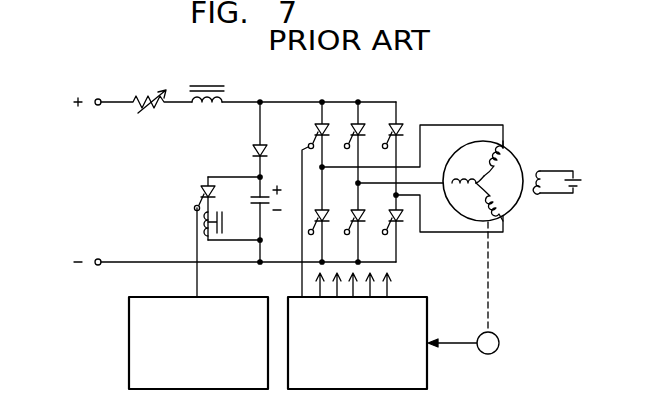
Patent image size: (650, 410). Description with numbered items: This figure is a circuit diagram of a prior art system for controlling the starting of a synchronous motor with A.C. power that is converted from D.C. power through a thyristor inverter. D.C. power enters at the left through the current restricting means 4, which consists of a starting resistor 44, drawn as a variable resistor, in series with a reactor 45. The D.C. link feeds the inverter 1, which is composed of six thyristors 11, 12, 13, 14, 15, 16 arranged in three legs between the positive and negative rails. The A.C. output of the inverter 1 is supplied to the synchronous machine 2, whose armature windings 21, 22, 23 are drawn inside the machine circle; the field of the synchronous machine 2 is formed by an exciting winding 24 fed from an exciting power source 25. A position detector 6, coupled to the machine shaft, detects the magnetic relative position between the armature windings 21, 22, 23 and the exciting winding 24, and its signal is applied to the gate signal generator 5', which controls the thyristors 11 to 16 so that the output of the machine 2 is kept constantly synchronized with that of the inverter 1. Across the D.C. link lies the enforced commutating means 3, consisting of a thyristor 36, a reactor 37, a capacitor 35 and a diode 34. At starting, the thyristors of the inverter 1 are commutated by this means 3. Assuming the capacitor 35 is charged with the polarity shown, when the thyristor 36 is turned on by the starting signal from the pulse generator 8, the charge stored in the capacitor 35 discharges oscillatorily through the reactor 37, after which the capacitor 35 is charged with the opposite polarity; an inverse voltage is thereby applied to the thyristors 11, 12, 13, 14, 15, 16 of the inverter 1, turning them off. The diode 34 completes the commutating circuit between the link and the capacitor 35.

The inverter 1 is at (350, 88).
The synchronous machine 2 is at (470, 114).
The enforced commutating means 3 is at (268, 88).
The current restricting means 4 is at (178, 74).
The gate signal generator 5' is at (377, 331).
The position detector 6 is at (499, 346).
The pulse generator 8 is at (129, 322).
The thyristor 11 is at (317, 127).
The thyristor 12 is at (331, 217).
The thyristor 13 is at (352, 130).
The thyristor 14 is at (367, 217).
The thyristor 15 is at (390, 130).
The thyristor 16 is at (405, 217).
The armature winding 21 is at (480, 161).
The armature winding 22 is at (460, 193).
The armature winding 23 is at (506, 205).
The exciting winding 24 is at (538, 171).
The exciting power source 25 is at (583, 183).
The diode 34 is at (253, 152).
The capacitor 35 is at (251, 198).
The thyristor 36 is at (200, 200).
The reactor 37 is at (224, 220).
The starting resistor 44 is at (152, 112).
The reactor 45 is at (210, 110).